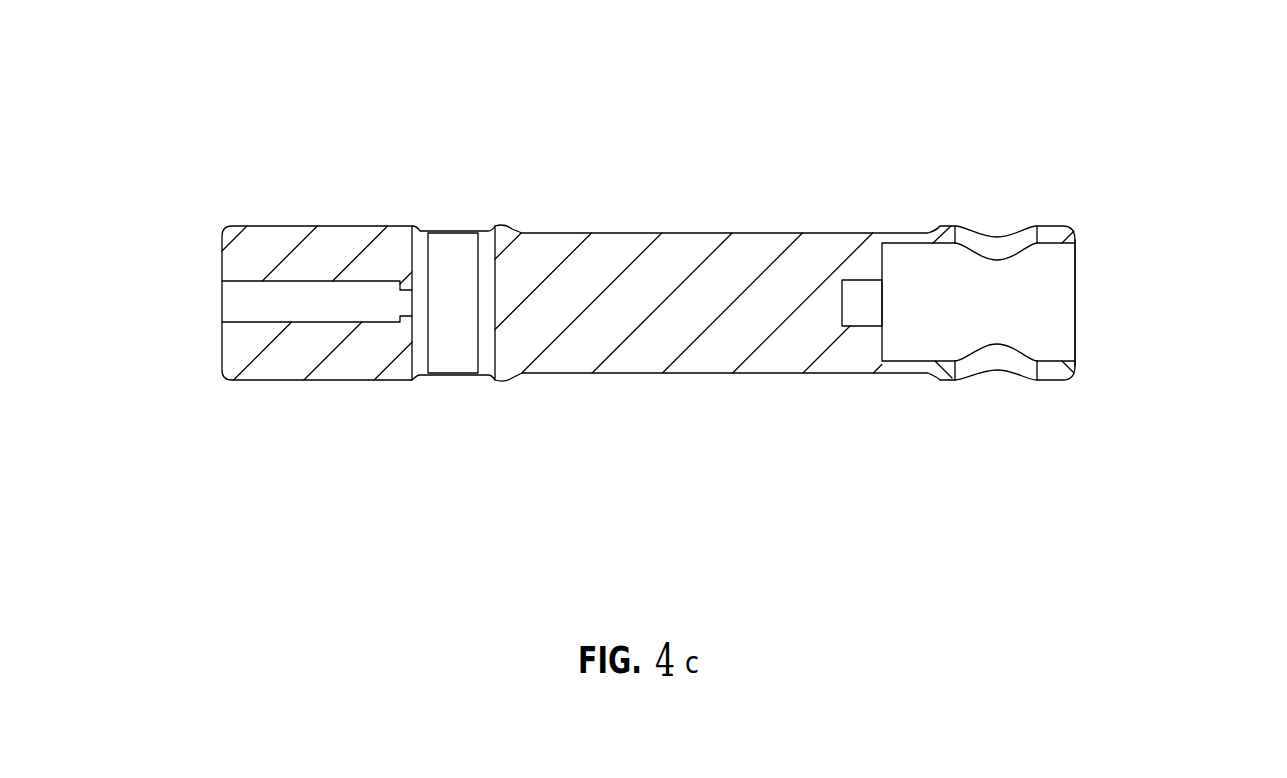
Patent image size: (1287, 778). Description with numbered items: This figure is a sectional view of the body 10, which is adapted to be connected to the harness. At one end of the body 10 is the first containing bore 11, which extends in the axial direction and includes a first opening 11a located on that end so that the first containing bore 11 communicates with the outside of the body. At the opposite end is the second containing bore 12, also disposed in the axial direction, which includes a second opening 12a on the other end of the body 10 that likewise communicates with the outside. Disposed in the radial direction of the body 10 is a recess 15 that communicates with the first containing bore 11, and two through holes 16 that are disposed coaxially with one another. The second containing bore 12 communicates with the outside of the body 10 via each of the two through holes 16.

The body 10 is at (246, 95).
The first containing bore 11 is at (313, 295).
The first opening 11a is at (222, 303).
The second containing bore 12 is at (1033, 323).
The second opening 12a is at (1075, 258).
The recess 15 is at (450, 262).
The through holes 16 is at (975, 240).